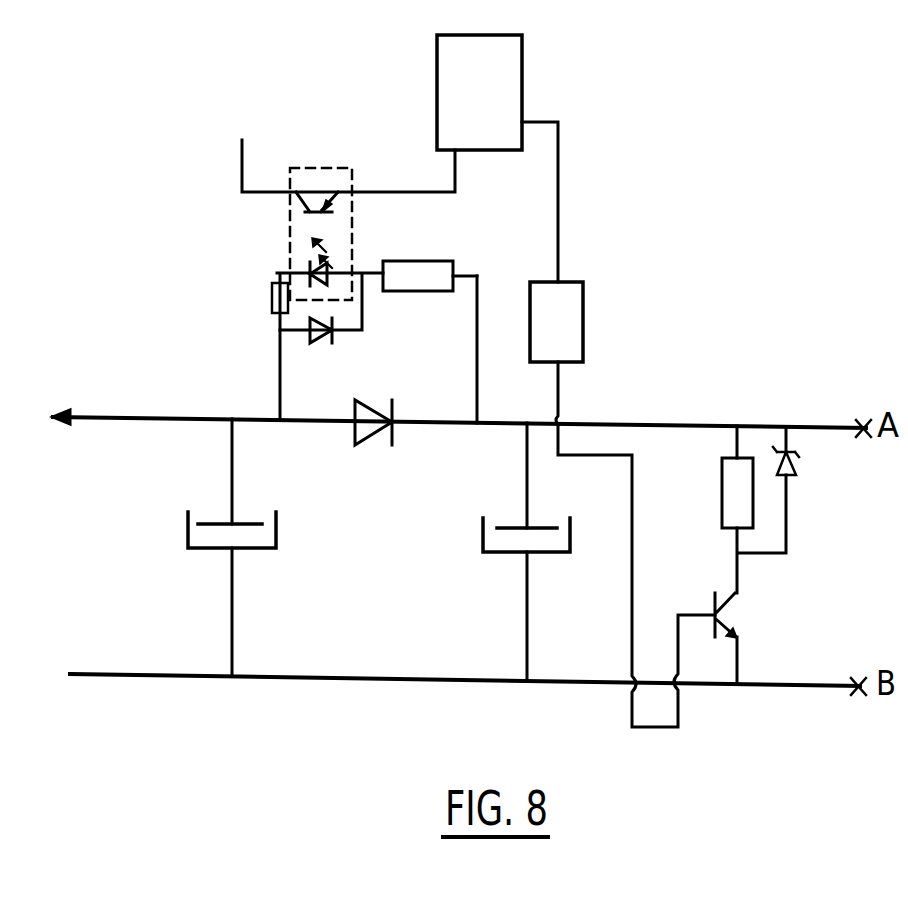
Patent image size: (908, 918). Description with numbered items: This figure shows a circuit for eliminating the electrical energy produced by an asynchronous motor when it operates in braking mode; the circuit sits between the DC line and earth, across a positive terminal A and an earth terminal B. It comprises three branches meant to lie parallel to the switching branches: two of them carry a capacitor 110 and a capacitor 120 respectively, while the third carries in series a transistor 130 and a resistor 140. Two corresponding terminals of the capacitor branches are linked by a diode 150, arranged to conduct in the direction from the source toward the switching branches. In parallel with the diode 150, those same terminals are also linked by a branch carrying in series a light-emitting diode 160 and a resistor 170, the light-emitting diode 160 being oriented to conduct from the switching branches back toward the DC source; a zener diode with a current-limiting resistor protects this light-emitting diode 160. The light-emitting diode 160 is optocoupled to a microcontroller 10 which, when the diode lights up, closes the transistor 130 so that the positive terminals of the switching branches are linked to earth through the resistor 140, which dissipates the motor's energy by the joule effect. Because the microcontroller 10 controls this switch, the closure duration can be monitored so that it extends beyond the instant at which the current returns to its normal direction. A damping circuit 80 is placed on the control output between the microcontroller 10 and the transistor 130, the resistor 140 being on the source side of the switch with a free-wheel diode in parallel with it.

The microcontroller 10 is at (445, 85).
The damping circuit 80 is at (568, 330).
The capacitor 110 is at (198, 552).
The capacitor 120 is at (508, 555).
The transistor 130 is at (715, 600).
The resistor 140 is at (722, 512).
The diode 150 is at (382, 446).
The light-emitting diode 160 is at (312, 272).
The resistor 170 is at (442, 270).